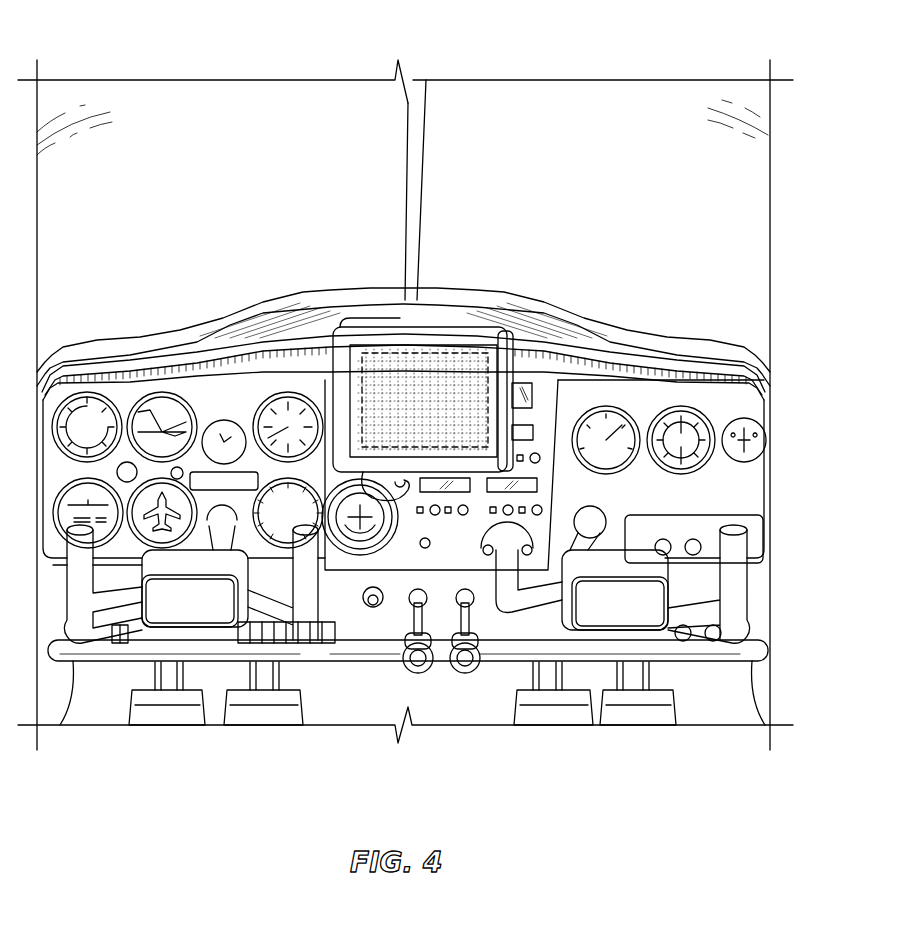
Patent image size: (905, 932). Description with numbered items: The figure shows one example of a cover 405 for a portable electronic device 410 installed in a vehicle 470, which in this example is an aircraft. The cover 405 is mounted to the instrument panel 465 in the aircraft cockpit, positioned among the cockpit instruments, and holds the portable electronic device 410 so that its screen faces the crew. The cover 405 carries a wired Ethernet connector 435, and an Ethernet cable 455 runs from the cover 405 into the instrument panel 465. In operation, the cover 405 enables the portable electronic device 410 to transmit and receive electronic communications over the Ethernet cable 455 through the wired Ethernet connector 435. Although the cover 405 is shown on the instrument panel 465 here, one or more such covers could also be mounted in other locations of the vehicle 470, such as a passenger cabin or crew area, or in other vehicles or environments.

The vehicle 470 is at (139, 50).
The portable electronic device 410 is at (430, 342).
The cover 405 is at (503, 335).
The wired Ethernet connector 435 is at (323, 515).
The Ethernet cable 455 is at (410, 500).
The instrument panel 465 is at (753, 492).